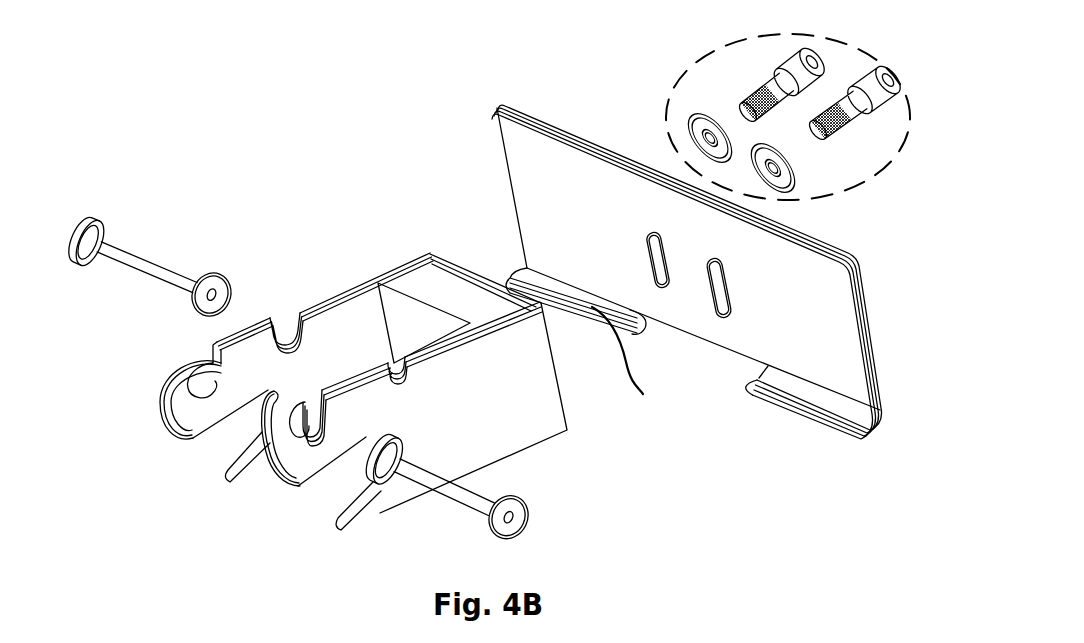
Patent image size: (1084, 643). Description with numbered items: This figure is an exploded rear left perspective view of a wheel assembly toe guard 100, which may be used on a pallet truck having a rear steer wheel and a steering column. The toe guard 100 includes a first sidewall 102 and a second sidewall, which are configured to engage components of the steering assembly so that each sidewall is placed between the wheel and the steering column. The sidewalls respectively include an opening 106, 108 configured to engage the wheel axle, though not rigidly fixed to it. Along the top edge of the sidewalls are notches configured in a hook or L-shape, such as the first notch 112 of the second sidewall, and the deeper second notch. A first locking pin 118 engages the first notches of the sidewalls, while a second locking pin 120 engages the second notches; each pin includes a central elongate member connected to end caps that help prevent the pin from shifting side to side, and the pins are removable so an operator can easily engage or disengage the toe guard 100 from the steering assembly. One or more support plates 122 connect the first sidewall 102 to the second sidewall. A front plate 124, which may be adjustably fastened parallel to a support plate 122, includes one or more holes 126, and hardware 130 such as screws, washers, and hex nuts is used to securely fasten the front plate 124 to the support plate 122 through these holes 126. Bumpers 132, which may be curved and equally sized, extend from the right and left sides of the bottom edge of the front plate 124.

The wheel assembly toe guard 100 is at (208, 124).
The first sidewall 102 is at (487, 427).
The opening 106 is at (322, 532).
The opening 108 is at (208, 488).
The first notch 112 is at (272, 325).
The first locking pin 118 is at (128, 253).
The second locking pin 120 is at (440, 487).
The support plate 122 is at (446, 290).
The front plate 124 is at (797, 307).
The holes 126 is at (722, 287).
The hardware 130 is at (850, 48).
The bumpers 132 is at (813, 392).